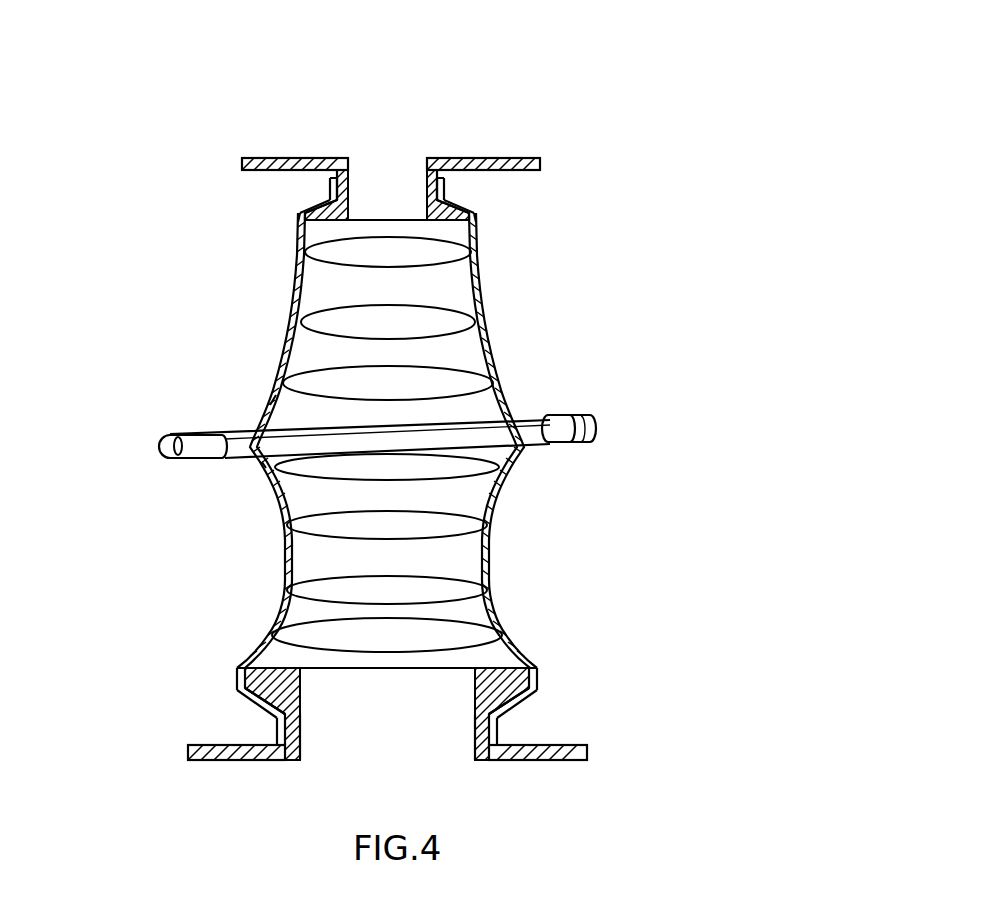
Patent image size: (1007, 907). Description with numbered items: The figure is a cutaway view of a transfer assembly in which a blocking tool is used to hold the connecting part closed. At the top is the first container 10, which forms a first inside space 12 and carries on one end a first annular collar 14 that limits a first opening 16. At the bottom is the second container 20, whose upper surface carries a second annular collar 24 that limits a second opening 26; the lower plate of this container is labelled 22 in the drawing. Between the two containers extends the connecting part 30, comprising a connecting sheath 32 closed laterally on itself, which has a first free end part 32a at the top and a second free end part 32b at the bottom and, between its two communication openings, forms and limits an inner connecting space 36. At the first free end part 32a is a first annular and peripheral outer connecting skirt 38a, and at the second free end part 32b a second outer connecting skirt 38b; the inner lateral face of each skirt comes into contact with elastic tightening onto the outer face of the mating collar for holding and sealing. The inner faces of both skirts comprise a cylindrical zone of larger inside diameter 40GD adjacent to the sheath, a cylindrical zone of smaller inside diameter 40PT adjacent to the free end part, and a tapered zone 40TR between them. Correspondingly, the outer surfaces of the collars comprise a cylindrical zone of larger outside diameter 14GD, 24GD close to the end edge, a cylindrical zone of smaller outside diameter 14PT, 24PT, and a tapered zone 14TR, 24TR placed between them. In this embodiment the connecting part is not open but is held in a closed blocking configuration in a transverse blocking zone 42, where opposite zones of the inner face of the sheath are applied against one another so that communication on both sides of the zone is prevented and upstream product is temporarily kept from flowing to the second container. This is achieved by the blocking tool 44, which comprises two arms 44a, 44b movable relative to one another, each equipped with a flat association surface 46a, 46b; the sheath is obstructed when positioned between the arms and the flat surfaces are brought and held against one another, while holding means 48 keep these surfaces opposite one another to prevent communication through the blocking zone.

The first container 10 is at (560, 154).
The first inside space 12 is at (493, 136).
The first annular collar 14 is at (445, 183).
The cylindrical zone of smaller outside diameter 14PT is at (358, 157).
The tapered zone 14TR is at (348, 212).
The cylindrical zone of larger outside diameter 14GD is at (340, 214).
The first opening 16 is at (420, 221).
The second container 20 is at (607, 750).
The lower plate body 22 is at (506, 784).
The second annular collar 24 is at (510, 688).
The cylindrical zone of larger outside diameter 24GD is at (280, 677).
The tapered zone 24TR is at (290, 700).
The cylindrical zone of smaller outside diameter 24PT is at (297, 735).
The second opening 26 is at (457, 668).
The connecting part 30 is at (536, 314).
The connecting sheath 32 is at (492, 362).
The first free end part 32a is at (496, 200).
The second free end part 32b is at (554, 700).
The inner connecting space 36 is at (467, 495).
The first annular and peripheral outer connecting skirt 38a is at (457, 212).
The second annular and peripheral outer connecting skirt 38b is at (490, 742).
The cylindrical zone of smaller inside diameter 40PT is at (330, 185).
The tapered zone 40TR is at (322, 202).
The cylindrical zone of larger inside diameter 40GD is at (300, 216).
The transverse blocking zone 42 is at (535, 458).
The blocking tool 44 is at (607, 403).
The arm 44a is at (165, 447).
The arm 44b is at (175, 458).
The flat association surface 46a is at (300, 425).
The flat association surface 46b is at (268, 455).
The holding means 48 is at (568, 433).